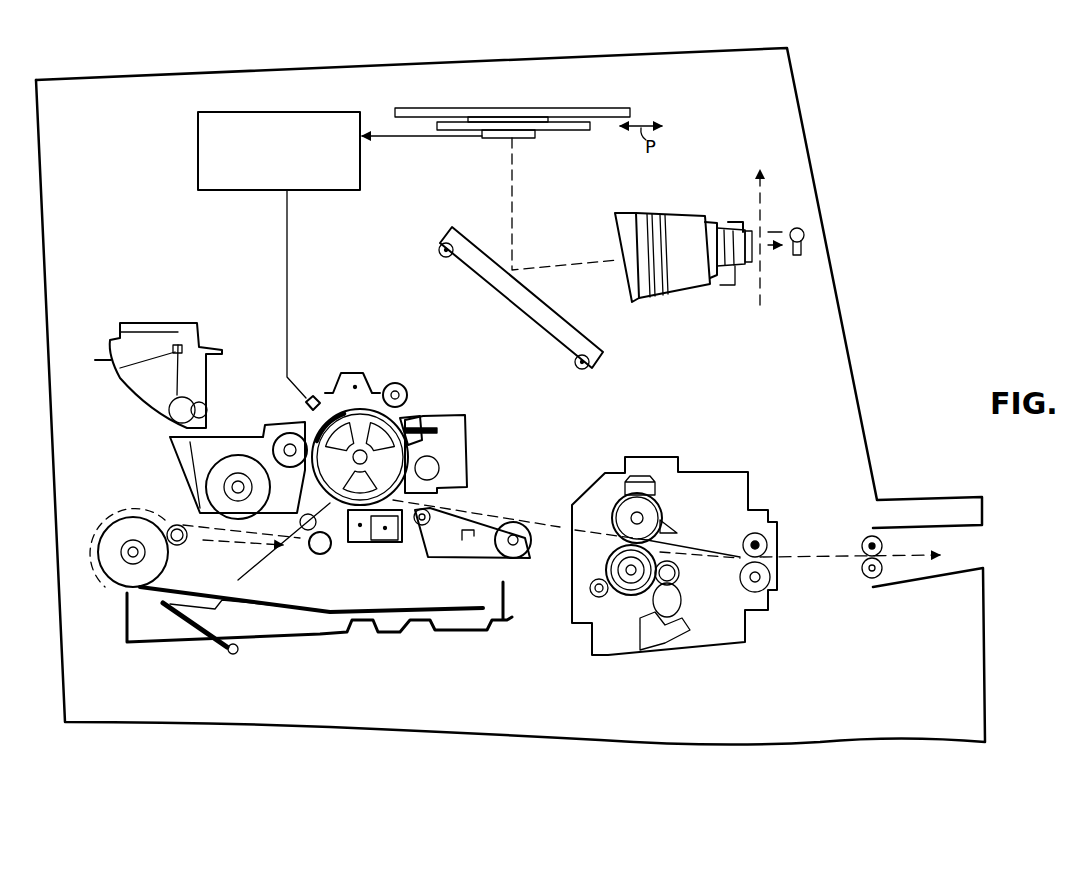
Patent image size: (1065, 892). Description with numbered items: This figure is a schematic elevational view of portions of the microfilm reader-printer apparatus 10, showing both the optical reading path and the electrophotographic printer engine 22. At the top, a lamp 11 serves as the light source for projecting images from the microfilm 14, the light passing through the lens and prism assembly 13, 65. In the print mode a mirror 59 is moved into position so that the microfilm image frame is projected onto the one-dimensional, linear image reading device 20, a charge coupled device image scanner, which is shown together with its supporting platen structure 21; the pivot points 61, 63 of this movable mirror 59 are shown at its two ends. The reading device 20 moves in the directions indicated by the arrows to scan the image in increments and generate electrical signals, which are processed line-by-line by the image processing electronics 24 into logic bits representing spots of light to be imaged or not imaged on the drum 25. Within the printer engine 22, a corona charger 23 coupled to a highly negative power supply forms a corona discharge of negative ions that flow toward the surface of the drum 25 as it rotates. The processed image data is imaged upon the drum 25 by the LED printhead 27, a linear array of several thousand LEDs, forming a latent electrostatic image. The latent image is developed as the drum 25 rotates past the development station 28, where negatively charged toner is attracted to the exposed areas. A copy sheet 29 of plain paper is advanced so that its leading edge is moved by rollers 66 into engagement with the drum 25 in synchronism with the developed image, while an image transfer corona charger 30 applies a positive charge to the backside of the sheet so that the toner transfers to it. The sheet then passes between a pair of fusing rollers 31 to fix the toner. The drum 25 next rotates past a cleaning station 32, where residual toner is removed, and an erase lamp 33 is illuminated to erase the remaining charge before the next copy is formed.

The reader-printer apparatus 10 is at (348, 48).
The lamp 11 is at (797, 227).
The lens and prism assembly 13 is at (737, 224).
The microfilm 14 is at (768, 298).
The linear image reading device 20 is at (534, 147).
The document platen 21 is at (627, 108).
The electrophotographic printer engine 22 is at (235, 328).
The corona charger 23 is at (352, 372).
The image processing electronics 24 is at (197, 143).
The drum 25 is at (412, 414).
The LED printhead 27 is at (302, 404).
The development station 28 is at (247, 437).
The copy sheet 29 is at (263, 543).
The image transfer corona charger 30 is at (384, 544).
The fusing rollers 31 is at (628, 600).
The cleaning station 32 is at (469, 442).
The erase lamp 33 is at (408, 402).
The mirror 59 is at (600, 345).
The mirror pivot 61 is at (575, 370).
The mirror pivot 63 is at (444, 258).
The lens and prism assembly 65 is at (695, 285).
The rollers 66 is at (320, 555).